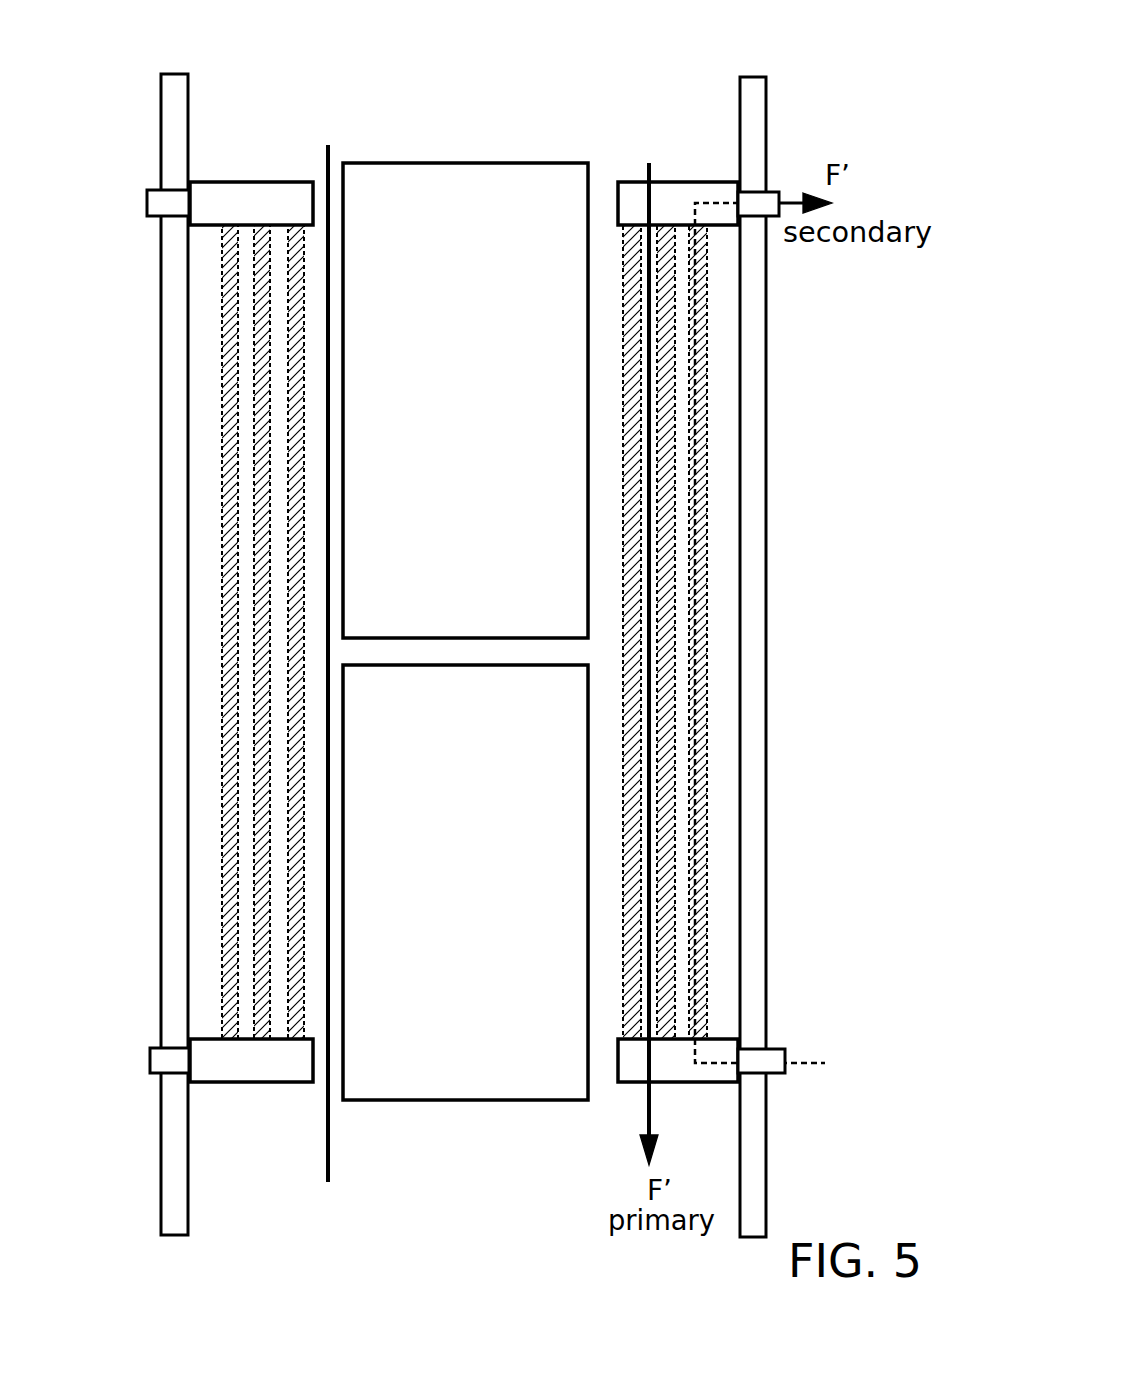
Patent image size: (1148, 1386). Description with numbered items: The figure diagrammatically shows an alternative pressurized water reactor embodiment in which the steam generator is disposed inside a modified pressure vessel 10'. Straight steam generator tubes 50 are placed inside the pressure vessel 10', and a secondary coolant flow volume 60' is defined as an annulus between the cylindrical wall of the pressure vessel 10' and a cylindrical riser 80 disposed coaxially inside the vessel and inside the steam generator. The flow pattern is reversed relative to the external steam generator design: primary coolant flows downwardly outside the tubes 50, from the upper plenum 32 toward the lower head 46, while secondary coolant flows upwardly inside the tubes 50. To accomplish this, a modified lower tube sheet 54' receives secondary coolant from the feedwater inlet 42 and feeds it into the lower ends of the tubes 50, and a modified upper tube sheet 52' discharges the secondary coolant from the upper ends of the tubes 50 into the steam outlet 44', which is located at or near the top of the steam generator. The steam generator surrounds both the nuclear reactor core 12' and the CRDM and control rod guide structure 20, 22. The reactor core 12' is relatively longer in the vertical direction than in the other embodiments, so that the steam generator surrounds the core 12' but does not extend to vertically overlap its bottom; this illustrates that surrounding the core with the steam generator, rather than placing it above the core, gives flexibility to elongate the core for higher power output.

The cylindrical riser 80 is at (322, 167).
The steam generator tubes 50 is at (186, 632).
The secondary coolant flow volume 60′ is at (275, 587).
The tube sheet 52′ is at (707, 180).
The lower tube sheet 54′ is at (717, 1082).
The steam outlet 44′ is at (775, 192).
The feedwater inlet 42 is at (775, 1048).
The pressure vessel 10′ is at (766, 477).
The upper plenum 32 is at (483, 111).
The CRDM units 20 is at (465, 400).
The CRDM guide structure 22 is at (503, 488).
The nuclear reactor core 12′ is at (478, 888).
The lower head 46 is at (485, 1243).